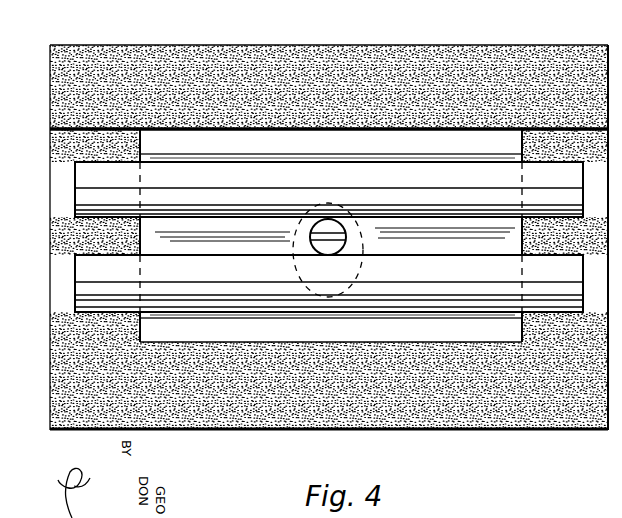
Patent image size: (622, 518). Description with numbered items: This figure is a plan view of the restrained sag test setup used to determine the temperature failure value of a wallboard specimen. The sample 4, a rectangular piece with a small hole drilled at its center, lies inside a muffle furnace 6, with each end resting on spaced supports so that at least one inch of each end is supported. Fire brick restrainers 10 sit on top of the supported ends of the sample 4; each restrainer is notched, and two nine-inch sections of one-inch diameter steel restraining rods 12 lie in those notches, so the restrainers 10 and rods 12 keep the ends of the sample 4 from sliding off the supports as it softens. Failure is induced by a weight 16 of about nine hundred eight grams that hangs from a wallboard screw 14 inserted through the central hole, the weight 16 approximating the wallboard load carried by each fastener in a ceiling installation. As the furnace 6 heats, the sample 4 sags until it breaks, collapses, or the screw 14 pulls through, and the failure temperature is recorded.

The sample 4 is at (373, 160).
The muffle furnace 6 is at (189, 441).
The fire brick restrainers 10 is at (60, 143).
The steel restraining rods 12 is at (187, 178).
The wallboard screw 14 is at (346, 233).
The weight 16 is at (343, 316).